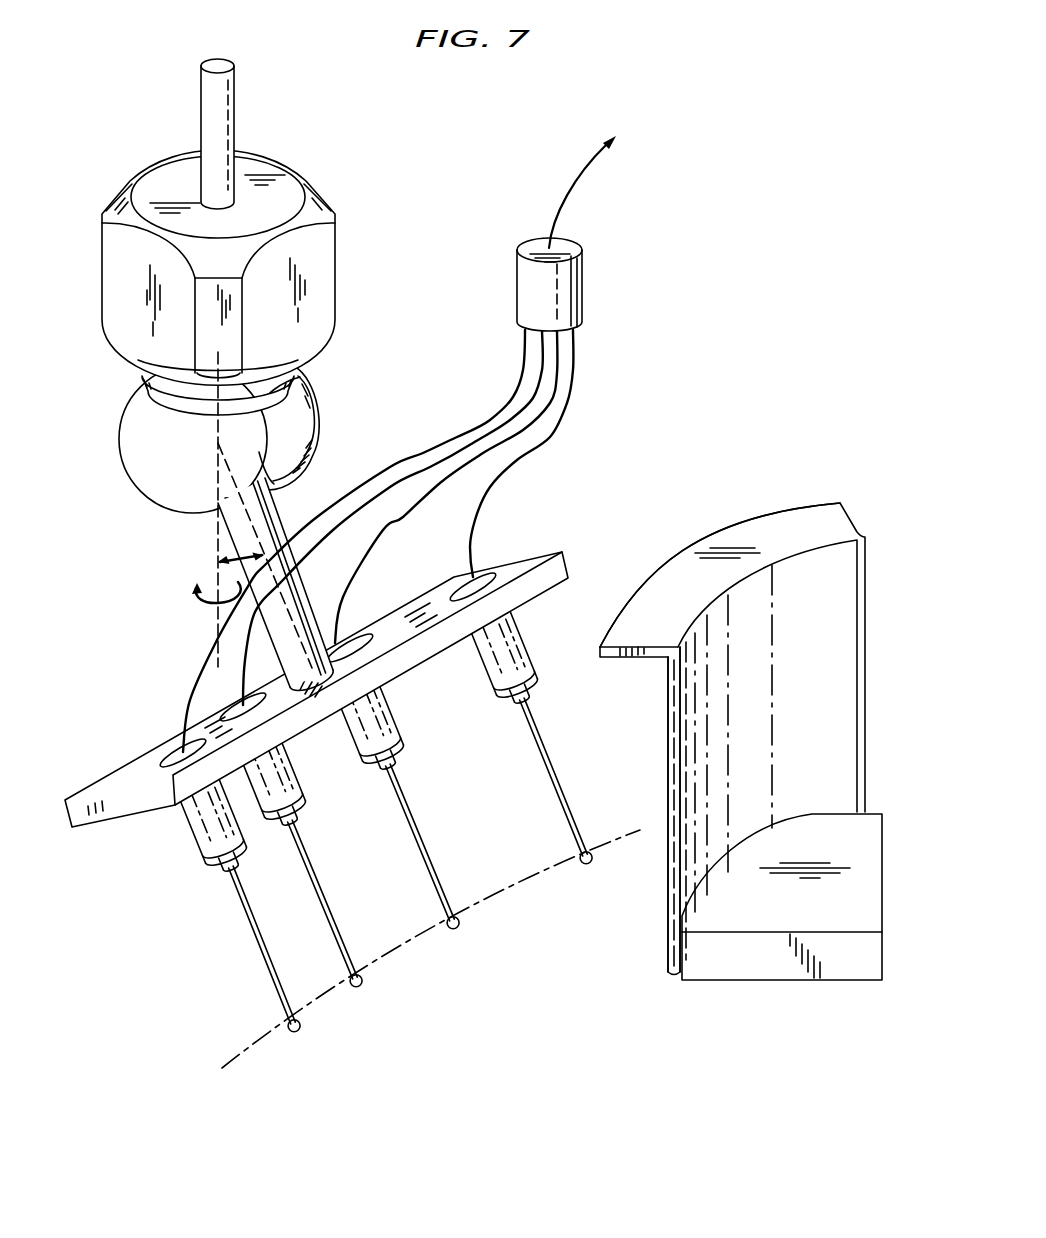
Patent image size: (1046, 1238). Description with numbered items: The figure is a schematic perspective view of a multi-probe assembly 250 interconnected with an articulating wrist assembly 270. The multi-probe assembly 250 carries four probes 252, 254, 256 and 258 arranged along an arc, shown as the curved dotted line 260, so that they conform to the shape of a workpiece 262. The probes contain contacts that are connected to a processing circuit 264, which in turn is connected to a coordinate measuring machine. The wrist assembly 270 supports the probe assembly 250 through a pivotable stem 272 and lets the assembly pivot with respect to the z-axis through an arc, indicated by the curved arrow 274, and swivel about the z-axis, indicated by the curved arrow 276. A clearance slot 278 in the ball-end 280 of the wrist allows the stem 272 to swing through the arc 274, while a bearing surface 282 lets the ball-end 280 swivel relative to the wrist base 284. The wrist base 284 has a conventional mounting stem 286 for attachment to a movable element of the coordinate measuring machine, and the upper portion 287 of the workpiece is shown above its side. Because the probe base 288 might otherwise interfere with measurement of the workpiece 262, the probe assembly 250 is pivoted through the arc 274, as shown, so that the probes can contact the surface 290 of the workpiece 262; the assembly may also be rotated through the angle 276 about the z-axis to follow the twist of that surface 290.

The multi-probe assembly 250 is at (578, 554).
The probe 252 is at (238, 915).
The probe 254 is at (320, 840).
The probe 256 is at (413, 780).
The probe 258 is at (535, 775).
The arc 260 is at (505, 893).
The workpiece 262 is at (846, 636).
The processing circuit 264 is at (583, 287).
The articulating wrist assembly 270 is at (138, 493).
The pivotable stem 272 is at (283, 517).
The arc 274 is at (240, 550).
The curved arrow 276 is at (197, 606).
The clearance slot 278 is at (286, 432).
The ball-end 280 is at (120, 458).
The bearing surface 282 is at (126, 386).
The wrist base 284 is at (322, 278).
The mounting stem 286 is at (233, 90).
The curved top surface 287 is at (798, 516).
The probe base 288 is at (127, 800).
The surface 290 is at (655, 738).